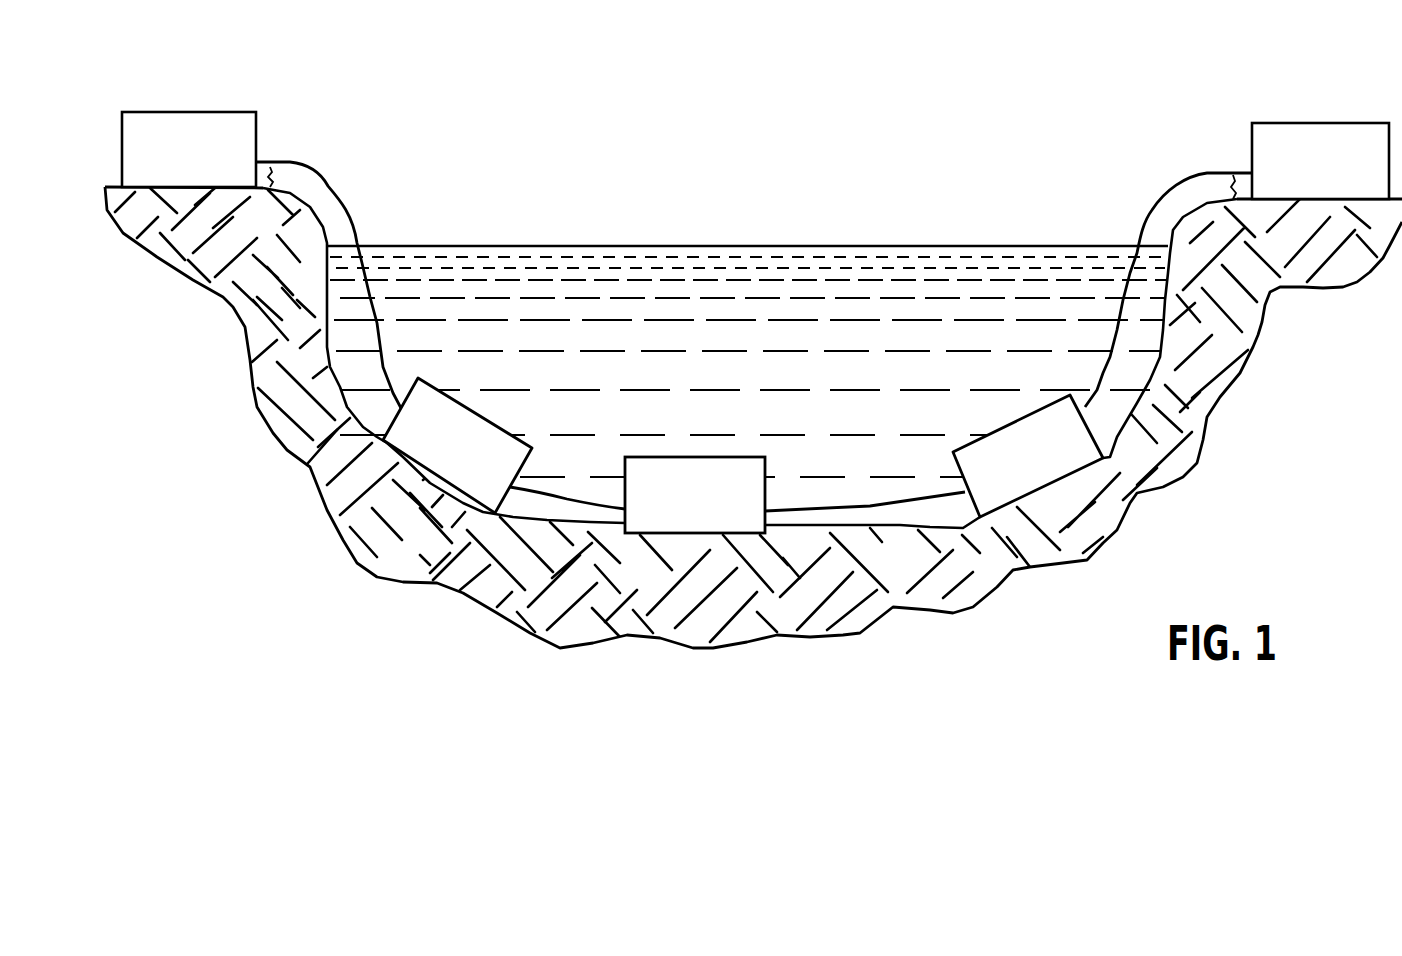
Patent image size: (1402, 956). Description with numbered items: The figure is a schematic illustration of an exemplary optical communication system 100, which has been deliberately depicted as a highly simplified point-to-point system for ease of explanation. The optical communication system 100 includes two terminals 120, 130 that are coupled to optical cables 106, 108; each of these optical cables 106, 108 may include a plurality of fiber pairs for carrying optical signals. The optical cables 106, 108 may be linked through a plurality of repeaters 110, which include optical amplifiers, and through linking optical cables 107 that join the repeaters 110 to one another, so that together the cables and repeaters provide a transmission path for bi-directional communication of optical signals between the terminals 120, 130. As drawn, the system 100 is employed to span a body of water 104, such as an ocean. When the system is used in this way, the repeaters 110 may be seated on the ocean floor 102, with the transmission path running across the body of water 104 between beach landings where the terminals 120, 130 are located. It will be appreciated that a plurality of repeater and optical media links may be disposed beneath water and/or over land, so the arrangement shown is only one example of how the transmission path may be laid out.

The optical communication system 100 is at (750, 128).
The ocean floor 102 is at (899, 532).
The body of water 104 is at (805, 246).
The optical cable 106 is at (352, 222).
The linking optical cable 107 is at (572, 497).
The optical cable 108 is at (1143, 226).
The repeater 110 is at (477, 407).
The terminal 120 is at (1308, 123).
The terminal 130 is at (195, 112).